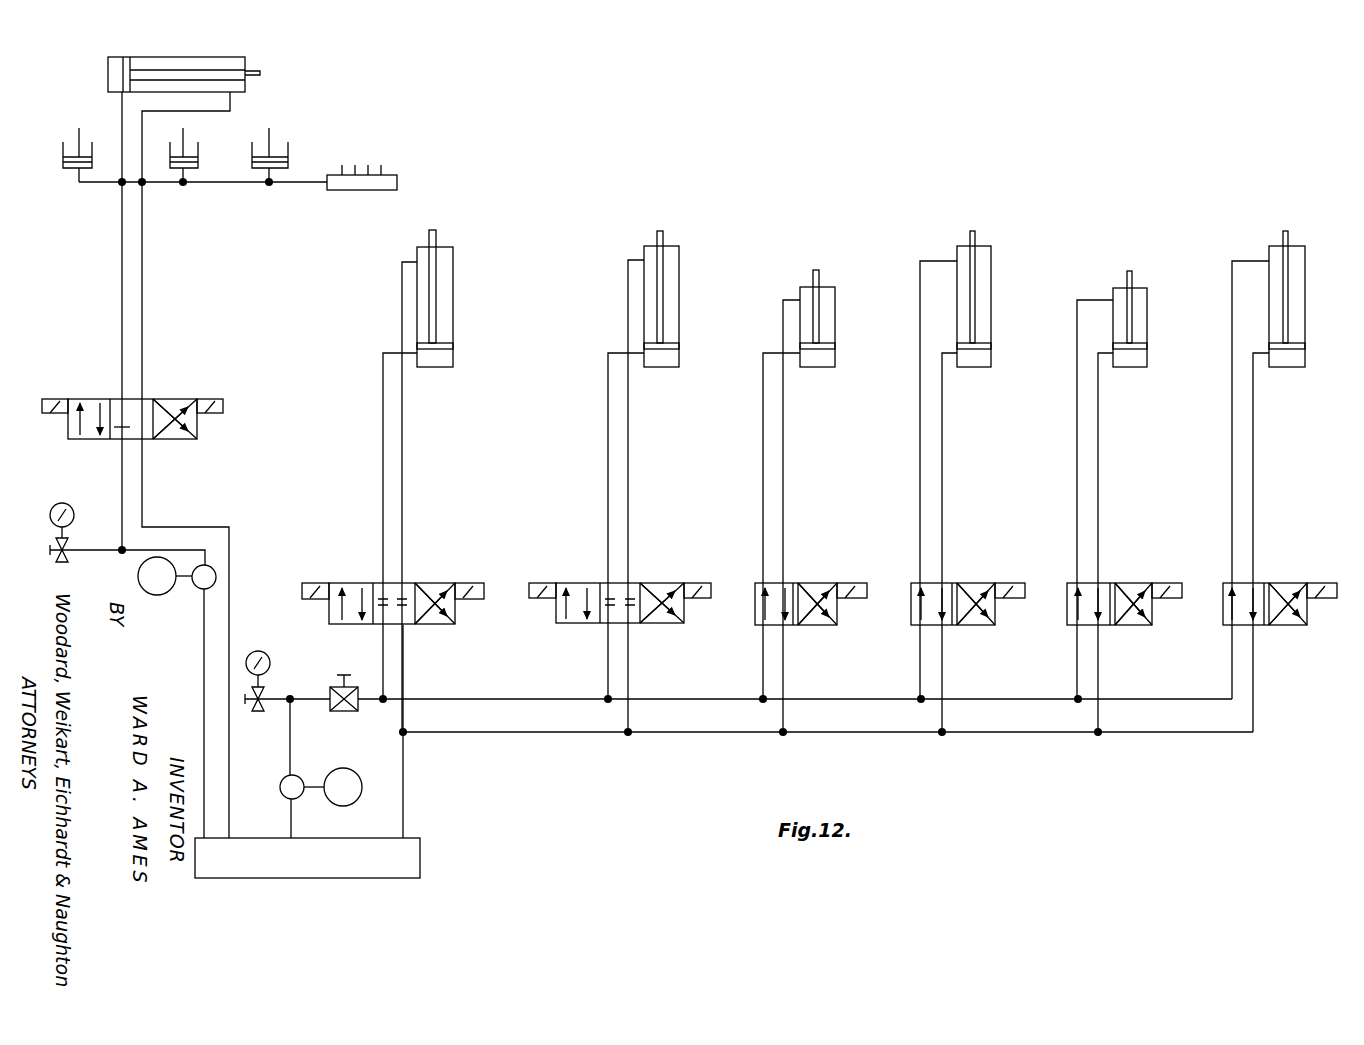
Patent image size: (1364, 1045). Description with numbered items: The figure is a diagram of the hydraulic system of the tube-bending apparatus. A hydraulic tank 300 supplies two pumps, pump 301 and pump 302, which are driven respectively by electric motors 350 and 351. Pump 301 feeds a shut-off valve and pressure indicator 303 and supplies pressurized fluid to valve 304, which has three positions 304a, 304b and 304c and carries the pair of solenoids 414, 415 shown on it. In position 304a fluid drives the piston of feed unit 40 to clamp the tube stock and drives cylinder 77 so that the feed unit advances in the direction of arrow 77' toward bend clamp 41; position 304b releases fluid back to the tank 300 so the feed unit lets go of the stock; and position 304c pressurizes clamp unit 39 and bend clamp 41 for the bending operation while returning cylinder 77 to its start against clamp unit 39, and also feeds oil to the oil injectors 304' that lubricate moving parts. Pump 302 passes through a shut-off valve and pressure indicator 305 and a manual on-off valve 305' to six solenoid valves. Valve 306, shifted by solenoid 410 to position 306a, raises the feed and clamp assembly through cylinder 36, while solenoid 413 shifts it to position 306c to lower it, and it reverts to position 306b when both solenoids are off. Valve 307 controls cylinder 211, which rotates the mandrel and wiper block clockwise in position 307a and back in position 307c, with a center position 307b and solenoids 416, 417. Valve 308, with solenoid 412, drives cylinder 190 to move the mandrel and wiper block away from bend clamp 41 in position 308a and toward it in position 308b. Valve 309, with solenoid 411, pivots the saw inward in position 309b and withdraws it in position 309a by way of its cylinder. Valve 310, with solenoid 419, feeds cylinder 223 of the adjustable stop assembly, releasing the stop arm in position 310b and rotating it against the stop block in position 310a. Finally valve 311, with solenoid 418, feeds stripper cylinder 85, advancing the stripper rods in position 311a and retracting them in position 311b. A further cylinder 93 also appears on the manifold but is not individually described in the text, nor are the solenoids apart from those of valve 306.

The cylinder 77 is at (160, 74).
The arrow 77' is at (153, 45).
The feed unit 40 is at (63, 152).
The clamp unit 39 is at (196, 158).
The bend clamp 41 is at (290, 150).
The oil injectors 304' is at (394, 170).
The valve 304 is at (165, 400).
The 304A position of valve 304 304a is at (94, 399).
The 304B position of valve 304 304b is at (120, 440).
The 304C position of valve 304 304c is at (156, 399).
The solenoid 414 is at (52, 399).
The solenoid 415 is at (215, 399).
The shut off valve and pressure indicator 303 is at (67, 538).
The electric motor 350 is at (138, 576).
The pump 301 is at (212, 567).
The shut off valve and pressure indicator 305 is at (281, 681).
The manual on-off valve 305' is at (353, 713).
The pump 302 is at (280, 787).
The electric motor 351 is at (330, 800).
The hydraulic tank 300 is at (420, 850).
The cylinder 36 is at (455, 268).
The cylinder 211 is at (681, 272).
The cylinder 190 is at (836, 320).
The hydraulic cylinder 93 is at (993, 286).
The cylinder 223 is at (1148, 300).
The stripper cylinder 85 is at (1307, 296).
The valve 306 is at (406, 599).
The 306A position of valve 306 306a is at (352, 583).
The 306B position of valve 306 306b is at (403, 583).
The 306C position of valve 306 306c is at (433, 625).
The solenoid 410 is at (310, 583).
The solenoid 413 is at (466, 583).
The valve 307 is at (618, 603).
The 307A position of valve 307 307a is at (579, 583).
The valve port 307b is at (633, 625).
The 307C position of valve 307 307c is at (660, 583).
The solenoid 416 is at (547, 598).
The solenoid 417 is at (693, 583).
The valve 308 is at (800, 588).
The 308A position of valve 308 308a is at (755, 630).
The 308B position of valve 308 308b is at (816, 583).
The solenoid 412 is at (855, 583).
The valve 309 is at (949, 590).
The 309A position of valve 309 309a is at (911, 603).
The 309B position of valve 309 309b is at (972, 583).
The solenoid 411 is at (1020, 583).
The valve 310 is at (1127, 600).
The 310A position of valve 310 310a is at (1067, 595).
The 310B position of valve 310 310b is at (1128, 583).
The solenoid 419 is at (1178, 583).
The valve 311 is at (1263, 601).
The 311A position of valve 311 311a is at (1223, 630).
The 311B position of valve 311 311b is at (1288, 583).
The solenoid 418 is at (1321, 583).